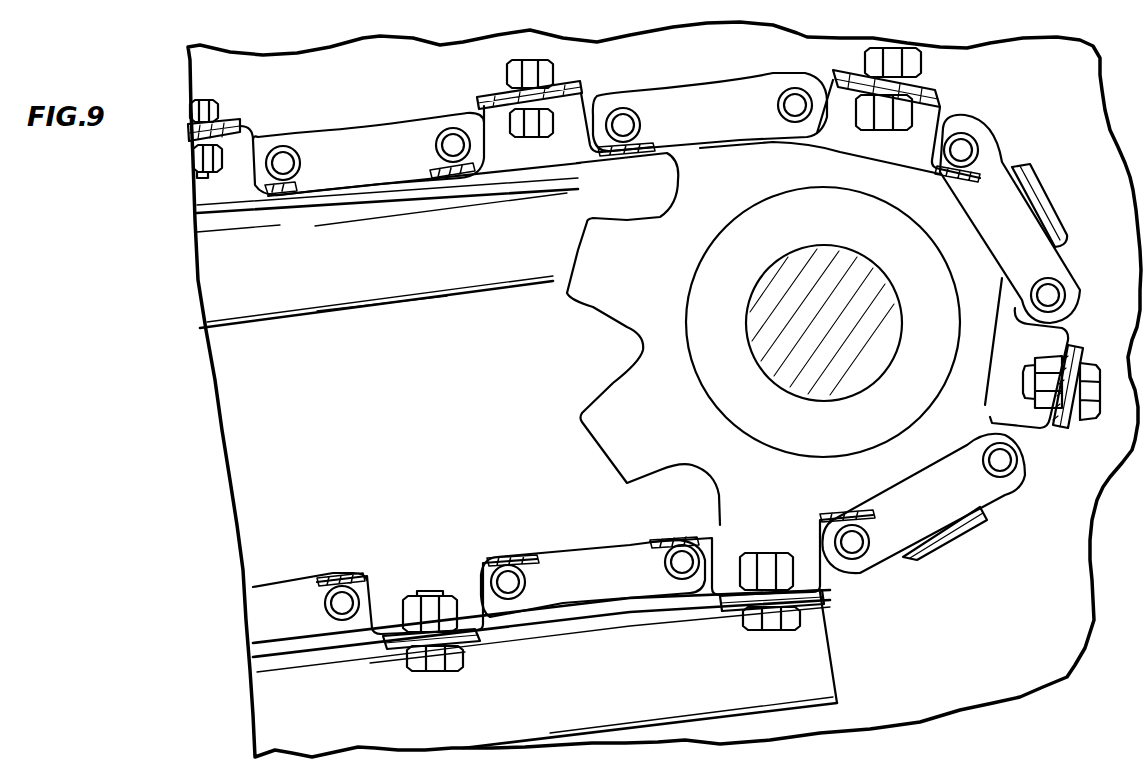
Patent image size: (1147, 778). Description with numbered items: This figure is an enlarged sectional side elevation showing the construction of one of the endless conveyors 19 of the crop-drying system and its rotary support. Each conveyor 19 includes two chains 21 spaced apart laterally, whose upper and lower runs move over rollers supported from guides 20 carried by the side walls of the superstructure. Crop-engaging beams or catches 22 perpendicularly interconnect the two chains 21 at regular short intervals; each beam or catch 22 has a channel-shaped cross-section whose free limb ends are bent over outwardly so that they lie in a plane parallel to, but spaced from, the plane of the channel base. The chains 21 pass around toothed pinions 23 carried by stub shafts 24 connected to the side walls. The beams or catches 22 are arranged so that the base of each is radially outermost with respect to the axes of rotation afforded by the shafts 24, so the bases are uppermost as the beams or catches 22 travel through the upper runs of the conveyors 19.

The endless conveyor 19 is at (373, 127).
The guide 20 is at (300, 297).
The chain 21 is at (707, 74).
The crop-engaging beam or catch 22 is at (480, 106).
The toothed pinion 23 is at (647, 347).
The stub shaft 24 is at (787, 275).